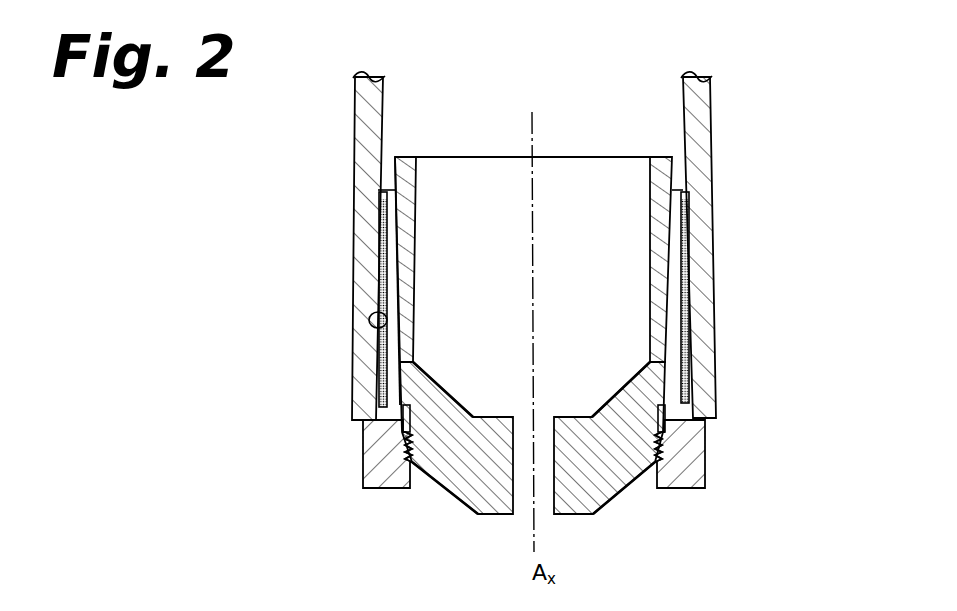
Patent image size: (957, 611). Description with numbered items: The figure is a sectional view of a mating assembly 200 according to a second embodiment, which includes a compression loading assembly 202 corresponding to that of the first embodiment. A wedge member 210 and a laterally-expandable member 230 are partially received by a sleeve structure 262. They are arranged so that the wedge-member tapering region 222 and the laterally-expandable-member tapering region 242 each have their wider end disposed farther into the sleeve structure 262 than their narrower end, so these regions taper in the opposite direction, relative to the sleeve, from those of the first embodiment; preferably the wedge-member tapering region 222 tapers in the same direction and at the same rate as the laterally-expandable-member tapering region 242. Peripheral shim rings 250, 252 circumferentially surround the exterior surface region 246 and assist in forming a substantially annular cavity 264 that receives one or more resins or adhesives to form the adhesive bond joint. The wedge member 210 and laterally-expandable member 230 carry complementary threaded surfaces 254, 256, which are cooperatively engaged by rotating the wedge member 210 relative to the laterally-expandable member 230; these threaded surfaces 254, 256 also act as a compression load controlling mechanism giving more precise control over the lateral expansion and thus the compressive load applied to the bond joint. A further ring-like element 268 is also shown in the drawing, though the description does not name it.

The assembly 200 is at (561, 305).
The compression loading assembly 202 is at (719, 464).
The wedge member 210 is at (450, 497).
The wedge-member tapering region 222 is at (601, 347).
The laterally-expandable member 230 is at (375, 458).
The laterally-expandable-member tapering region 242 is at (384, 228).
The exterior surface region 246 is at (388, 313).
The peripheral shim ring 250 is at (690, 388).
The peripheral shim ring 252 is at (685, 188).
The complementary threaded surface 254 is at (662, 447).
The complementary threaded surface 256 is at (747, 447).
The sleeve structure 262 is at (702, 246).
The annular cavity 264 is at (378, 300).
The washer 268 is at (665, 420).